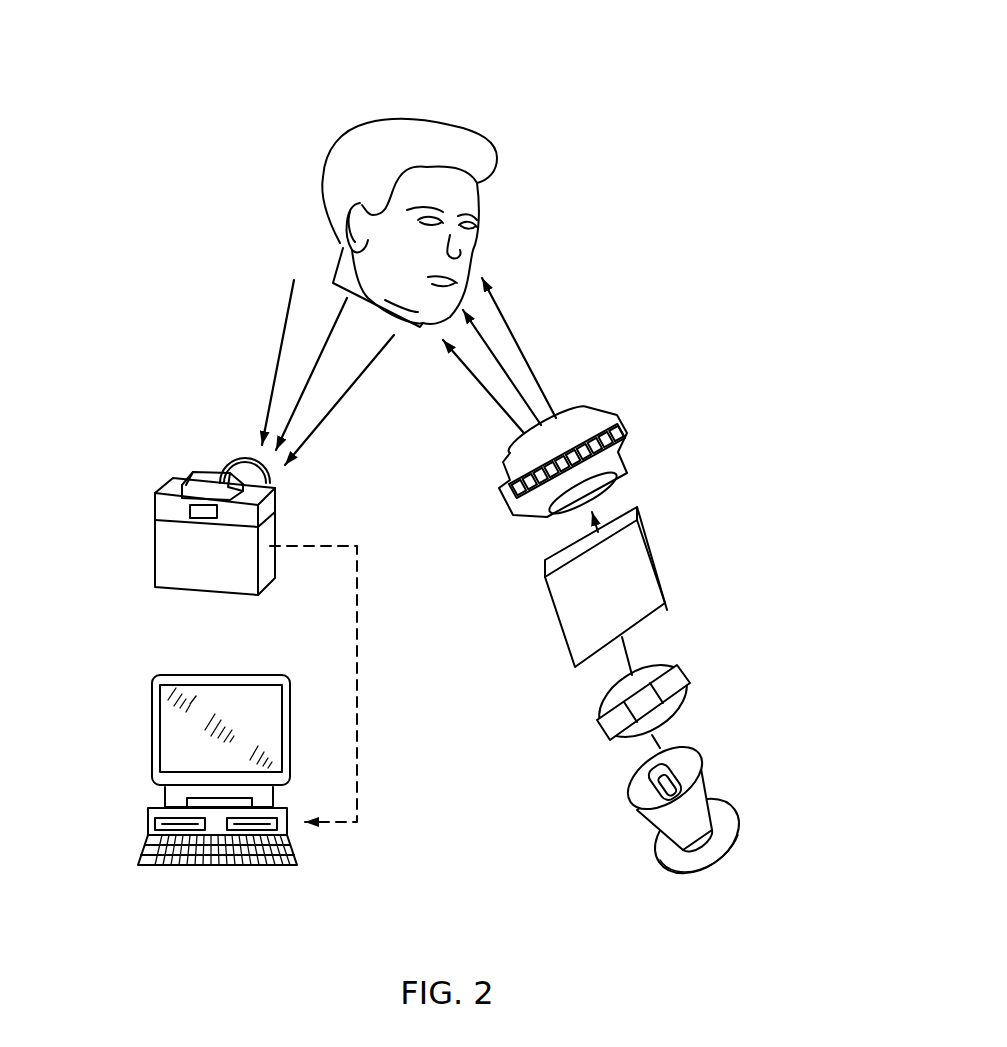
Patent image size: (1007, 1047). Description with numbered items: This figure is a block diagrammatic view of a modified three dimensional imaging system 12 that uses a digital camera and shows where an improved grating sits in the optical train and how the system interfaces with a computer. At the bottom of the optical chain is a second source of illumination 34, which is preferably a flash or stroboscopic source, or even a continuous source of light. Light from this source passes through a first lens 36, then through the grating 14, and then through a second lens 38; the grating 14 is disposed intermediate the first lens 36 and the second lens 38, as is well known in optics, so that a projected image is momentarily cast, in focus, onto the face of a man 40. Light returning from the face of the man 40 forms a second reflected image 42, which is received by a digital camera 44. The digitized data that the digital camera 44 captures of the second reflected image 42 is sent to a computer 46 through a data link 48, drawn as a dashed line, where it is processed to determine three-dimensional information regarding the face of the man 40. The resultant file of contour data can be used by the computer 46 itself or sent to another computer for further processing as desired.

The modified three dimensional imaging system 12 is at (586, 72).
The grating 14 is at (668, 590).
The second source of illumination 34 is at (735, 800).
The first lens 36 is at (688, 668).
The second lens 38 is at (627, 436).
The face of a man 40 is at (487, 190).
The second reflected image 42 is at (262, 428).
The digital camera 44 is at (153, 523).
The computer 46 is at (152, 772).
The data link 48 is at (357, 744).